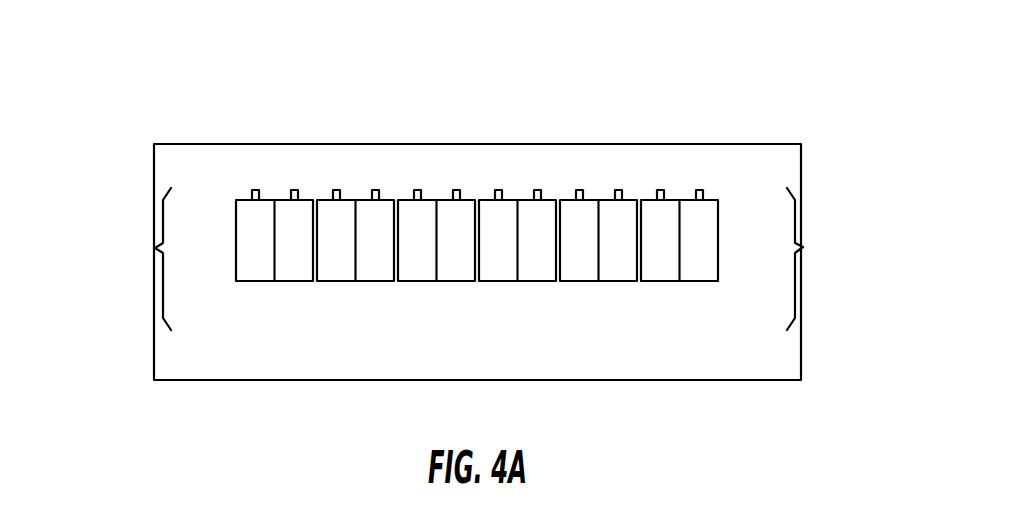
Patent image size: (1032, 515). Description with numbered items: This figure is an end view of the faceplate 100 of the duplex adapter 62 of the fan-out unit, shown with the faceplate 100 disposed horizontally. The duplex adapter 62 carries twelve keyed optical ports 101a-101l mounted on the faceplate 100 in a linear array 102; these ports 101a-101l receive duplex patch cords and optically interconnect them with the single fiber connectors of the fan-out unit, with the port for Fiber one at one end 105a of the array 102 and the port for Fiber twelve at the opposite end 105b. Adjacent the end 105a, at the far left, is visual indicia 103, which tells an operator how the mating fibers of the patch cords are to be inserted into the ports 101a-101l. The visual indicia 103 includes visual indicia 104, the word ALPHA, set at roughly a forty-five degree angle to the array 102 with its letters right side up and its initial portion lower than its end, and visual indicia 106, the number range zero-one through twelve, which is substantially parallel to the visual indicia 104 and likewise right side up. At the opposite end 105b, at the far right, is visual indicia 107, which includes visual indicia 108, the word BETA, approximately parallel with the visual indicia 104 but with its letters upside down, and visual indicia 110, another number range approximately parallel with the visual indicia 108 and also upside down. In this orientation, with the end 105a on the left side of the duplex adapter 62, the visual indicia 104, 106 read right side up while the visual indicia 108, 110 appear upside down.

The duplex adapter 62 is at (688, 97).
The faceplate 100 is at (685, 174).
The optical ports 101a-101l is at (717, 182).
The linear array 102 is at (760, 248).
The visual indicia 103 is at (155, 248).
The visual indicia 104 is at (203, 181).
The end of the array 105a is at (203, 258).
The opposite end of the array 105b is at (777, 220).
The visual indicia 106 is at (217, 337).
The visual indicia 107 is at (803, 247).
The visual indicia 108 is at (768, 328).
The visual indicia 110 is at (772, 177).